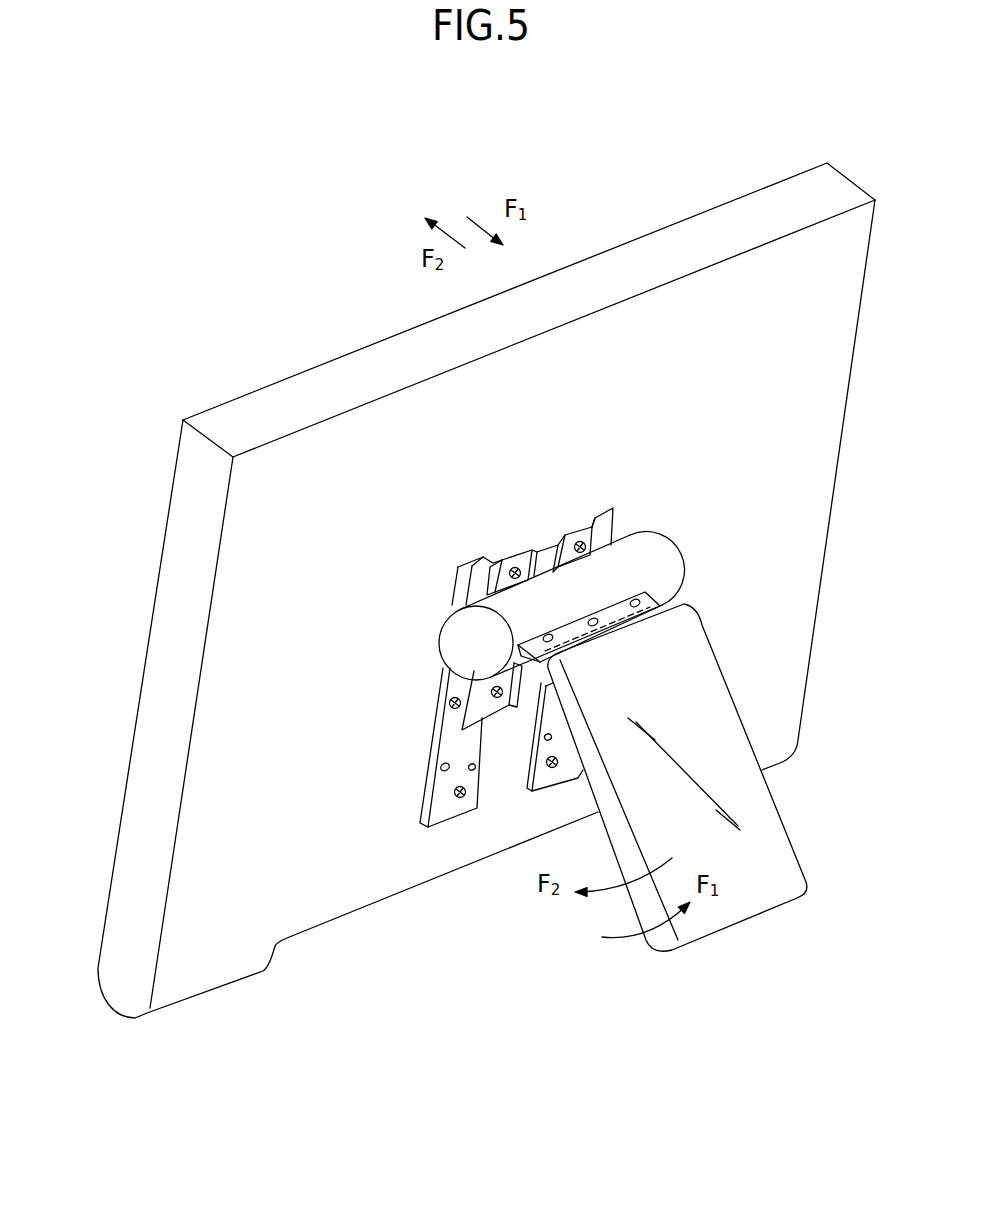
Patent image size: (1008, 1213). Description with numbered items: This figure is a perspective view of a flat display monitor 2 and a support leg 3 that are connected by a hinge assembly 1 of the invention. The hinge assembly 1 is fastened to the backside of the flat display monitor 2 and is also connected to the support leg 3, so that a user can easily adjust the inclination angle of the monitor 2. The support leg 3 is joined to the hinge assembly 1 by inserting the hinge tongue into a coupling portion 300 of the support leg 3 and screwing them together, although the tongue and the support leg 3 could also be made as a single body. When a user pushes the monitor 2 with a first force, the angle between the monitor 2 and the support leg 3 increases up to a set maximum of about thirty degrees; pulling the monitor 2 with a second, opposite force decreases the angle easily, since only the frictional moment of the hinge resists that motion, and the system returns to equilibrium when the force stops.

The hinge assembly 1 is at (585, 654).
The flat display monitor 2 is at (143, 602).
The support leg 3 is at (780, 848).
The coupling portion 300 is at (660, 596).